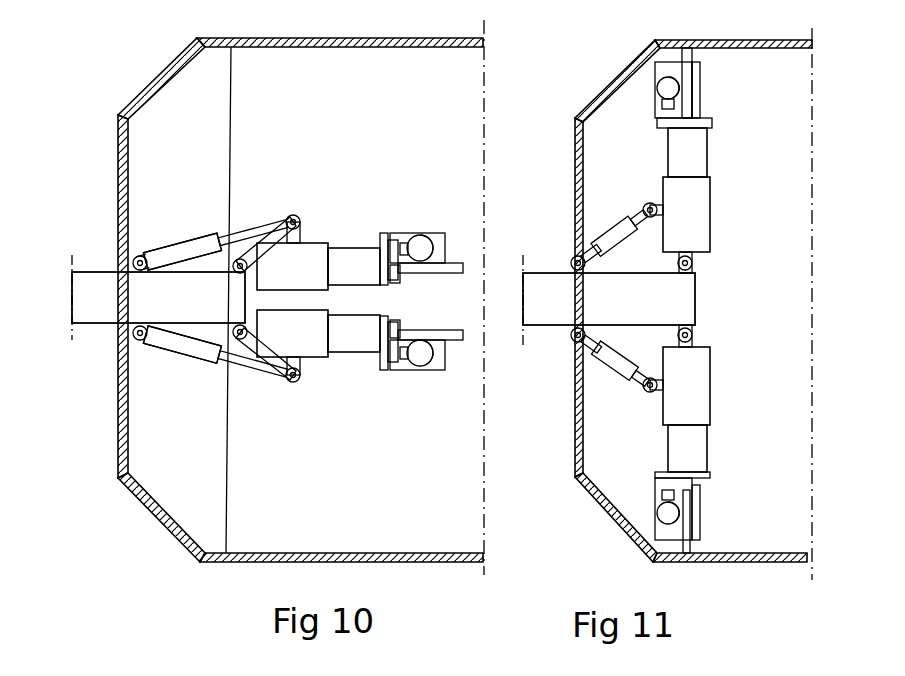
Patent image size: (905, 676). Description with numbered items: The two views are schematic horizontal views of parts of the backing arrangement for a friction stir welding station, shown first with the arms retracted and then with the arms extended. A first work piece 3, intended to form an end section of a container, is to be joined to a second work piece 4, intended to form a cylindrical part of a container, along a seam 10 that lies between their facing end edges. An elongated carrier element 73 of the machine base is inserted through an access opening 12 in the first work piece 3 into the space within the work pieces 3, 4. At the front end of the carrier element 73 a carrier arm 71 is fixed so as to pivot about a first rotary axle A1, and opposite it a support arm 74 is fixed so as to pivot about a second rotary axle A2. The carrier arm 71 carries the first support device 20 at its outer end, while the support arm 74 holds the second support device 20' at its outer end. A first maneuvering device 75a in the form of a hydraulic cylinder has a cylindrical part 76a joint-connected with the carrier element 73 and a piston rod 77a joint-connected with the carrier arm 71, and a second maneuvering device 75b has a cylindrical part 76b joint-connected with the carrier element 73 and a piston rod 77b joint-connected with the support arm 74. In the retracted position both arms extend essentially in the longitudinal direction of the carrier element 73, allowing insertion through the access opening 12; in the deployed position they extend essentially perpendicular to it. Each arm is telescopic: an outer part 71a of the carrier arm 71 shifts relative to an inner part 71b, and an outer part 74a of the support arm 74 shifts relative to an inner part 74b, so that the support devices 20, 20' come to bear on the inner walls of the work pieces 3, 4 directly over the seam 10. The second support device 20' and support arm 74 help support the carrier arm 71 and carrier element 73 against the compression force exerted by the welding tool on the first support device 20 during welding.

In FIG. 10, the first work piece 3 is at (170, 527).
In FIG. 11, the first work piece 3 is at (605, 510).
In FIG. 10, the second work piece 4 is at (255, 561).
In FIG. 11, the second work piece 4 is at (738, 562).
In FIG. 10, the seam 10 is at (228, 492).
In FIG. 11, the seam 10 is at (688, 47).
In FIG. 10, the access opening 12 is at (118, 362).
In FIG. 10, the first support device 20 is at (421, 386).
In FIG. 11, the first support device 20 is at (713, 509).
In FIG. 10, the second support device 20' is at (421, 219).
In FIG. 11, the second support device 20' is at (714, 90).
In FIG. 10, the carrier arm 71 is at (328, 383).
In FIG. 11, the carrier arm 71 is at (715, 411).
In FIG. 10, the outer part of carrier arm 71a is at (355, 352).
In FIG. 11, the outer part of carrier arm 71a is at (700, 447).
In FIG. 10, the inner part of carrier arm 71b is at (308, 366).
In FIG. 11, the inner part of carrier arm 71b is at (705, 363).
In FIG. 10, the carrier element 73 is at (88, 272).
In FIG. 11, the carrier element 73 is at (541, 276).
In FIG. 10, the support arm 74 is at (330, 216).
In FIG. 11, the support arm 74 is at (690, 183).
In FIG. 10, the outer part of support arm 74a is at (333, 220).
In FIG. 11, the outer part of support arm 74a is at (680, 152).
In FIG. 10, the inner part of support arm 74b is at (318, 240).
In FIG. 11, the inner part of support arm 74b is at (712, 205).
In FIG. 10, the first maneuvering device 75a is at (200, 380).
In FIG. 11, the first maneuvering device 75a is at (608, 392).
In FIG. 10, the second maneuvering device 75b is at (203, 212).
In FIG. 11, the second maneuvering device 75b is at (615, 212).
In FIG. 10, the cylindrical part 76a is at (166, 345).
In FIG. 10, the cylindrical part 76b is at (170, 250).
In FIG. 10, the piston rod 77a is at (258, 382).
In FIG. 10, the piston rod 77b is at (250, 232).
In FIG. 10, the first rotary axle A1 is at (243, 345).
In FIG. 11, the first rotary axle A1 is at (697, 332).
In FIG. 10, the second rotary axle A2 is at (236, 276).
In FIG. 11, the second rotary axle A2 is at (700, 265).